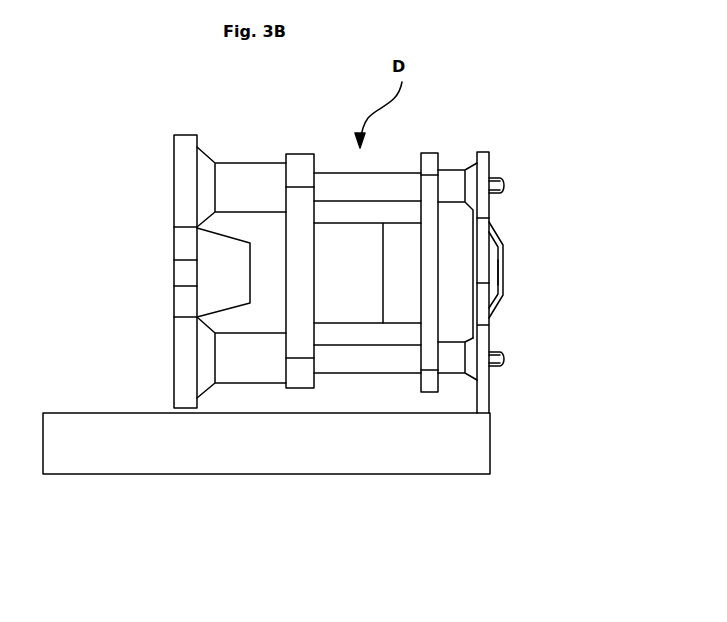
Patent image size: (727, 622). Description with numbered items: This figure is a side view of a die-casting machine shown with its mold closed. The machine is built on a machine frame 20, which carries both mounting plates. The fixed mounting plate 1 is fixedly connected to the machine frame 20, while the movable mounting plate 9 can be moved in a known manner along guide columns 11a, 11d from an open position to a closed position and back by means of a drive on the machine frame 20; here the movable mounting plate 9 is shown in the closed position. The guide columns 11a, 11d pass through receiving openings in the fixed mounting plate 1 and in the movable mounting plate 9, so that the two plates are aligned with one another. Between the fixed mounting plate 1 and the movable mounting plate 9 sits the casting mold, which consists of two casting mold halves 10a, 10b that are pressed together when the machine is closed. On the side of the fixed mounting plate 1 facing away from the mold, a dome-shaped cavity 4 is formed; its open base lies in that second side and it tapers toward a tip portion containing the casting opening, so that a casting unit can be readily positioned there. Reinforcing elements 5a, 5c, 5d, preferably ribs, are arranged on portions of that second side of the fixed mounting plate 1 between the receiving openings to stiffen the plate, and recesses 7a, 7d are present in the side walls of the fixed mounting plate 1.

The fixed mounting plate 1 is at (460, 158).
The dome-shaped cavity 4 is at (493, 247).
The reinforcing element 5a is at (503, 186).
The reinforcing element 5c is at (503, 360).
The reinforcing element 5d is at (498, 273).
The recess 7a is at (482, 158).
The recess 7d is at (457, 385).
The movable mounting plate 9 is at (242, 149).
The casting mold half 10a is at (402, 303).
The casting mold half 10b is at (338, 305).
The guide column 11a is at (440, 120).
The guide column 11d is at (408, 365).
The machine frame 20 is at (478, 452).